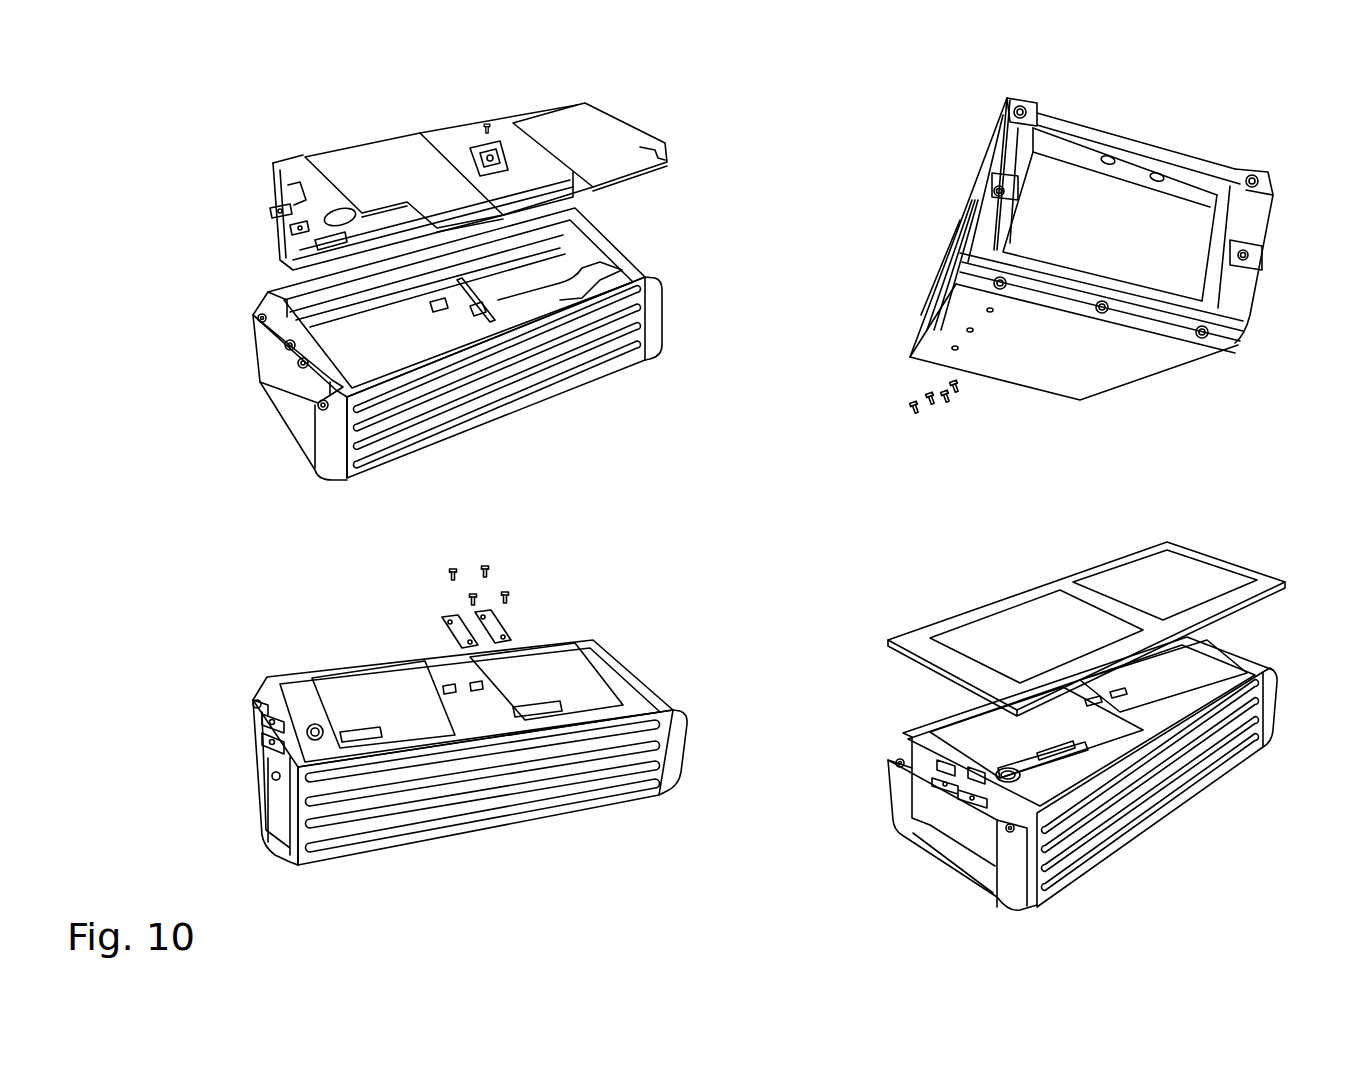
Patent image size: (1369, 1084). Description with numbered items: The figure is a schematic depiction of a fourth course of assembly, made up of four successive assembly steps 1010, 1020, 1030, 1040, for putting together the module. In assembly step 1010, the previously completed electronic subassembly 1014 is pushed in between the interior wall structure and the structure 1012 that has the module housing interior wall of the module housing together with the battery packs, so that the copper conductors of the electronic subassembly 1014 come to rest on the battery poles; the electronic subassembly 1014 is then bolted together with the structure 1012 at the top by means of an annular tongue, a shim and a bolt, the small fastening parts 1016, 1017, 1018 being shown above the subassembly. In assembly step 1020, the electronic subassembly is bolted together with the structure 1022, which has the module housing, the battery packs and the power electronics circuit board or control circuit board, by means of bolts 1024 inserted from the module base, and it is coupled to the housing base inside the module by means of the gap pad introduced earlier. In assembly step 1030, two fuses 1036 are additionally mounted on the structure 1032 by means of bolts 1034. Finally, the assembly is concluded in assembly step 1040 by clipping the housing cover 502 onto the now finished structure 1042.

The assembly step 1010 is at (233, 157).
The structure having the module housing interior wall and battery packs 1012 is at (527, 371).
The electronic subassembly 1014 is at (594, 148).
The connector 1016 is at (500, 143).
The mounting hole 1017 is at (490, 150).
The screw 1018 is at (487, 130).
The assembly step 1020 is at (920, 162).
The structure having the module housing, battery packs and power electronics circuit 1022 is at (1205, 213).
The bolts 1024 is at (933, 417).
The assembly step 1030 is at (272, 630).
The structure 1032 is at (572, 763).
The bolts 1034 is at (522, 595).
The fuses 1036 is at (443, 633).
The assembly step 1040 is at (880, 635).
The housing cover 502 is at (1020, 614).
The finished structure 1042 is at (1192, 763).